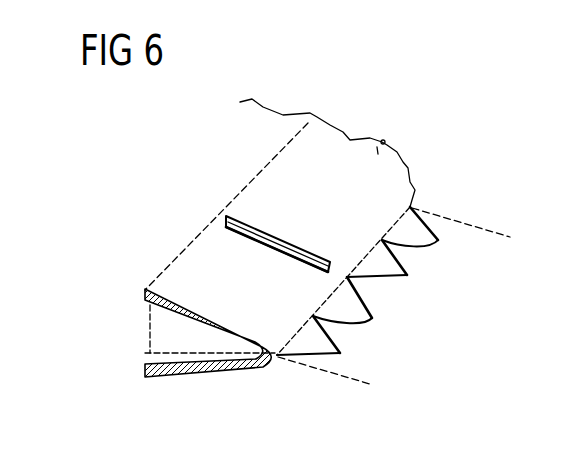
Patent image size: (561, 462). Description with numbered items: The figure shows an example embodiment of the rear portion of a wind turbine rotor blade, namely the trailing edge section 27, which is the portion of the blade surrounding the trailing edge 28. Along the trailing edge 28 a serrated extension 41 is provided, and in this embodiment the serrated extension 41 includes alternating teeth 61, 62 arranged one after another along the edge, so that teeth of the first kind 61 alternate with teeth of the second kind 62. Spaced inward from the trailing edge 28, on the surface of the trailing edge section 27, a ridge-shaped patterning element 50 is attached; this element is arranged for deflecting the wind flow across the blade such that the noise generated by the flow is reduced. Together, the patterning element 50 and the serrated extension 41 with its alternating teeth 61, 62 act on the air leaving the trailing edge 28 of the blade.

The trailing edge section 27 is at (385, 141).
The trailing edge 28 is at (345, 272).
The serrated extension 41 is at (392, 290).
The ridge-shaped patterning element 50 is at (276, 242).
The alternating tooth 61 is at (440, 242).
The alternating tooth 62 is at (408, 275).